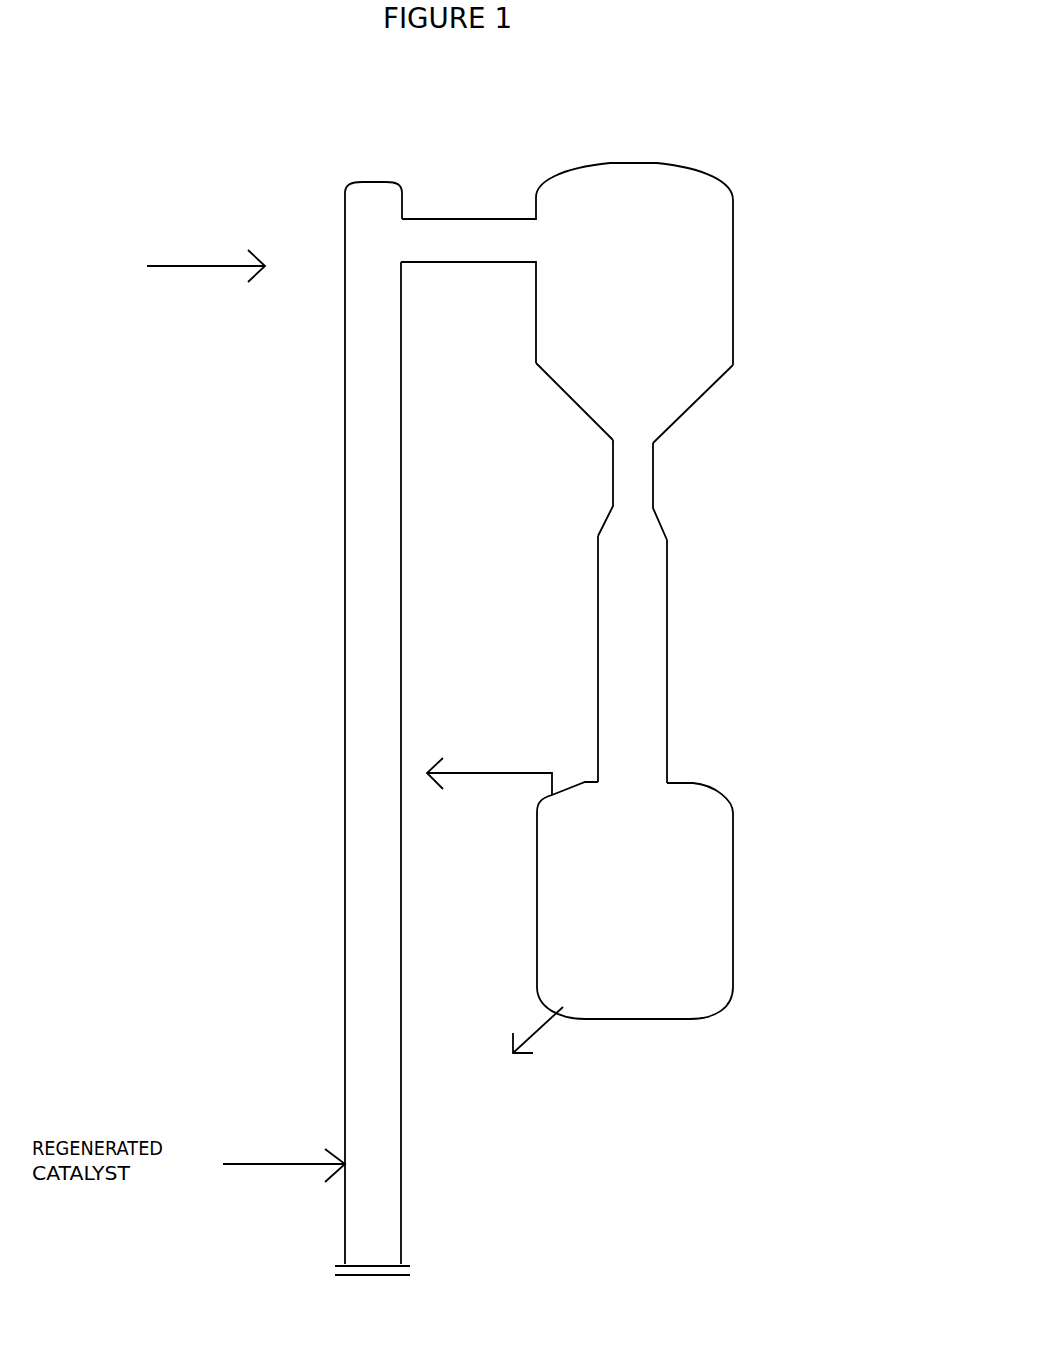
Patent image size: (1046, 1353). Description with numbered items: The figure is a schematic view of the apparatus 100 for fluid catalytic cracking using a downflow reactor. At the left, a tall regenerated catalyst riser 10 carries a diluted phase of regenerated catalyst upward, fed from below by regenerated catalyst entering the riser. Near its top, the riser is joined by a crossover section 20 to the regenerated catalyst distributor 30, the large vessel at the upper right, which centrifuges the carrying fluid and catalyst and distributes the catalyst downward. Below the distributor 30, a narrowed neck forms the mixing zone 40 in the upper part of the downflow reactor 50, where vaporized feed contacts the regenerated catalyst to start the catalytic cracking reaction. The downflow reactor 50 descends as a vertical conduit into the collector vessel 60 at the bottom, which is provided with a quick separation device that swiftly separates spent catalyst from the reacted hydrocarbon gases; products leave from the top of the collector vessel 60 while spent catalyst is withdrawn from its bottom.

The regenerated catalyst riser 10 is at (345, 447).
The crossover section 20 is at (436, 219).
The regenerated catalyst distributor 30 is at (733, 221).
The mixing zone 40 is at (653, 498).
The downflow reactor 50 is at (667, 634).
The collector vessel 60 is at (733, 830).
The apparatus 100 is at (206, 247).